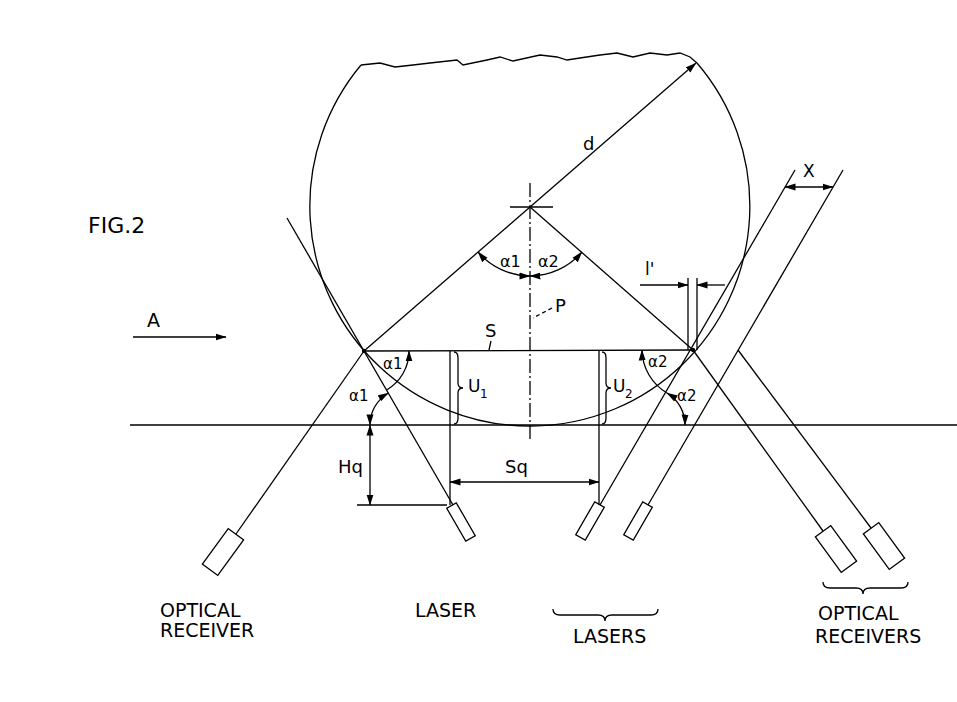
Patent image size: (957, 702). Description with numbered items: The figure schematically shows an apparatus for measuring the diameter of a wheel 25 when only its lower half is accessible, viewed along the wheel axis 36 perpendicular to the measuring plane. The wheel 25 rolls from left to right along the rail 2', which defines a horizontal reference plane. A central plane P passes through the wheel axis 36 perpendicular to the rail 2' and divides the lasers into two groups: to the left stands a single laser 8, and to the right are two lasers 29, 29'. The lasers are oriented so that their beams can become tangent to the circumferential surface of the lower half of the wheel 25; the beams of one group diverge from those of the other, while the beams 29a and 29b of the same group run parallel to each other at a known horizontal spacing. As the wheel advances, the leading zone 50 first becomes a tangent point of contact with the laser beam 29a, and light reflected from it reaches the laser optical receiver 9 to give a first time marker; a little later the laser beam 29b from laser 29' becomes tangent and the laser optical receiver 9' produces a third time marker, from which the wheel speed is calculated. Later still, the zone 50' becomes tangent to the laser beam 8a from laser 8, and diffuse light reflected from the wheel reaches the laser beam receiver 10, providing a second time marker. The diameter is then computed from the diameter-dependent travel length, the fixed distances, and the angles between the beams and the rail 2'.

The rail 2' is at (543, 406).
The wheel 25 is at (722, 137).
The wheel axis 36 is at (528, 204).
The zone 50' is at (385, 334).
The leading point or zone 50 is at (711, 366).
The laser beam 8a is at (289, 230).
The laser 8 is at (460, 540).
The laser beam receiver 10 is at (233, 547).
The laser beam 29a is at (777, 203).
The laser beam 29b is at (821, 209).
The laser 29 is at (583, 553).
The laser 29' is at (635, 553).
The laser optical receiver 9 is at (822, 565).
The laser optical receiver 9' is at (903, 563).